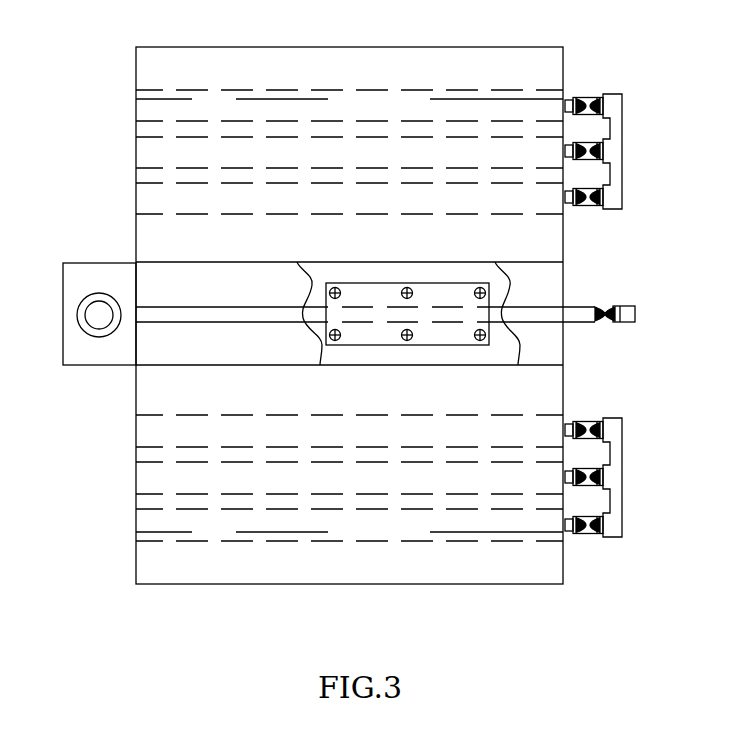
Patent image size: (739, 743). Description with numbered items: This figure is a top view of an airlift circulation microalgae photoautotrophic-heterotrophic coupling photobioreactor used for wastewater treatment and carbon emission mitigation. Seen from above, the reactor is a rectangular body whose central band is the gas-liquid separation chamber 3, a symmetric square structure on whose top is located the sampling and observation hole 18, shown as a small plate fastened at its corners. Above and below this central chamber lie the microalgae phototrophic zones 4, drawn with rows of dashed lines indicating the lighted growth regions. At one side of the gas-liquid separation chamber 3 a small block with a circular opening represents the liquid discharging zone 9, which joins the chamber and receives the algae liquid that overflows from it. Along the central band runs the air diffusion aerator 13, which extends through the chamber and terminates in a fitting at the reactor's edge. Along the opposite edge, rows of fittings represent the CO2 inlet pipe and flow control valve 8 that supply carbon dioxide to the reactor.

The gas-liquid separation chamber 3 is at (545, 287).
The microalgae phototrophic zone 4 is at (532, 77).
The CO2 inlet pipe and flow control valve 8 is at (600, 427).
The liquid discharging zone 9 is at (100, 280).
The air diffusion aerator 13 is at (193, 313).
The sampling and observation hole 18 is at (443, 332).